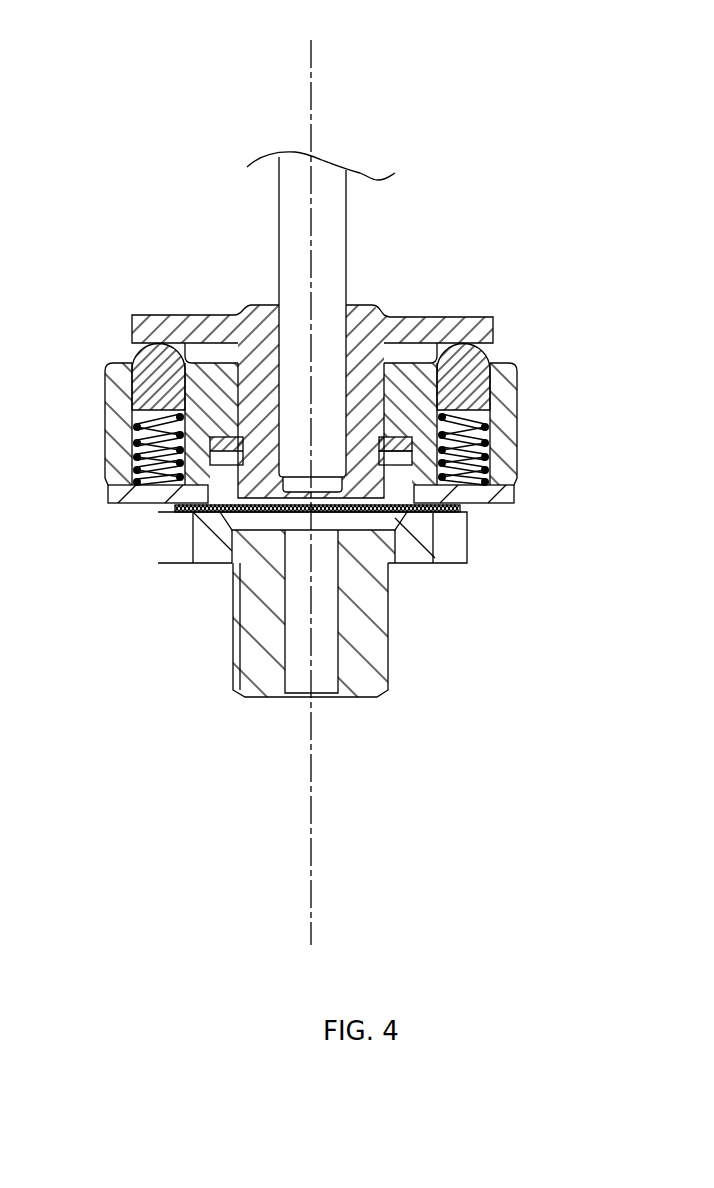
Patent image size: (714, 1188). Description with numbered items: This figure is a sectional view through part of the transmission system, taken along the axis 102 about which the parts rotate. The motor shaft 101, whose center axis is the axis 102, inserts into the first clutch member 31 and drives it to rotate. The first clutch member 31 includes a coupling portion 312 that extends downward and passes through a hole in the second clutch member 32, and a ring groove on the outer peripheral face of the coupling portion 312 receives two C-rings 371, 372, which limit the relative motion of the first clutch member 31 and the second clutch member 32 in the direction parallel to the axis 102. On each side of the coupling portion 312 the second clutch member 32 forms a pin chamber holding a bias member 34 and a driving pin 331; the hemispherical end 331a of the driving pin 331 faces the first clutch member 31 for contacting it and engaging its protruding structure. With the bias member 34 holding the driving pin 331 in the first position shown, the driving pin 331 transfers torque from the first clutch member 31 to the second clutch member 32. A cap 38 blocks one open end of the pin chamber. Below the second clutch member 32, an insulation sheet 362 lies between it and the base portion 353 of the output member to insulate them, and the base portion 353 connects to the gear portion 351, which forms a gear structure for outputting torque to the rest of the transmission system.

The motor shaft 101 is at (297, 225).
The axis 102 is at (308, 98).
The first clutch member 31 is at (250, 307).
The coupling portion 312 is at (372, 403).
The driving pin 331 is at (153, 381).
The hemispherical end 331a is at (152, 345).
The bias member 34 is at (160, 442).
The second clutch member 32 is at (515, 442).
The C-ring 371 is at (403, 437).
The C-ring 372 is at (405, 450).
The cap 38 is at (483, 500).
The insulation sheet 362 is at (193, 512).
The base portion 353 is at (212, 547).
The gear portion 351 is at (255, 632).